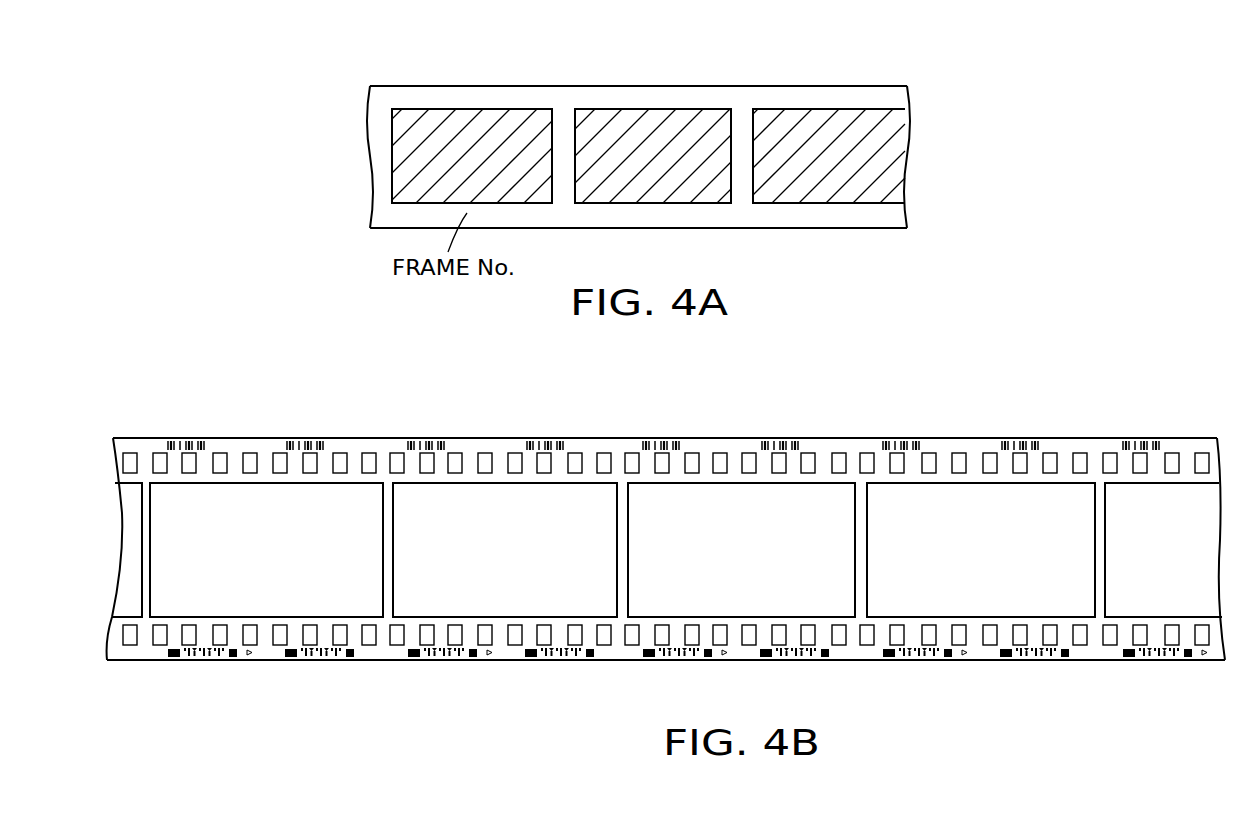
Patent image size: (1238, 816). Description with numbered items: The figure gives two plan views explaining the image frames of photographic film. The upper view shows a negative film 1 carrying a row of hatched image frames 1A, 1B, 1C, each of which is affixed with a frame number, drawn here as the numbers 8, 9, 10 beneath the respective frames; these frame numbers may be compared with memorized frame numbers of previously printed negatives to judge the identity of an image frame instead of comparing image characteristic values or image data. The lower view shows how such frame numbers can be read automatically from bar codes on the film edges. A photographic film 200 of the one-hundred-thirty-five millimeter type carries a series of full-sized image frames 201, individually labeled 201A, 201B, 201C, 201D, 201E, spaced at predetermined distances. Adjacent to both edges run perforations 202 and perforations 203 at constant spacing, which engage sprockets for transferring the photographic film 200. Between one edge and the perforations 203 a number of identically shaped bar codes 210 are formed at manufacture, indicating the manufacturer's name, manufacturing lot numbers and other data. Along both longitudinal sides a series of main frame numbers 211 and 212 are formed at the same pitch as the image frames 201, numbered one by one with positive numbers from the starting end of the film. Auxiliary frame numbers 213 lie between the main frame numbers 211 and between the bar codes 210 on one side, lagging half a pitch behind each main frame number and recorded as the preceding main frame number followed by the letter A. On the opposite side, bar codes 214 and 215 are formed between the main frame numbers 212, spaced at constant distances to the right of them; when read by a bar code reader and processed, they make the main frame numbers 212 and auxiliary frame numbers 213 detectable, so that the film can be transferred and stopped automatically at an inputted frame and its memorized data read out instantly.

In FIG. 4A, the negative film 1 is at (700, 83).
In FIG. 4A, the image frame 1A is at (492, 108).
In FIG. 4A, the image frame 1B is at (629, 108).
In FIG. 4A, the image frame 1C is at (823, 108).
In FIG. 4A, the frame number 8 is at (475, 216).
In FIG. 4A, the frame number 9 is at (655, 216).
In FIG. 4A, the frame number 10 is at (831, 216).
In FIG. 4B, the photographic film 200 is at (716, 422).
In FIG. 4B, the image frames 201 is at (617, 550).
In FIG. 4B, the image frame 201A is at (266, 550).
In FIG. 4B, the image frame 201B is at (505, 550).
In FIG. 4B, the image frame 201C is at (741, 550).
In FIG. 4B, the image frame 201D is at (981, 550).
In FIG. 4B, the image frame 201E is at (1163, 550).
In FIG. 4B, the perforations 202 is at (250, 453).
In FIG. 4B, the perforations 203 is at (366, 647).
In FIG. 4B, the bar codes 210 is at (310, 663).
In FIG. 4B, the main frame numbers 211 is at (622, 662).
In FIG. 4B, the main frame numbers 212 is at (391, 437).
In FIG. 4B, the auxiliary frame numbers 213 is at (503, 662).
In FIG. 4B, the bar codes 214 is at (200, 414).
In FIG. 4B, the bar codes 215 is at (305, 433).